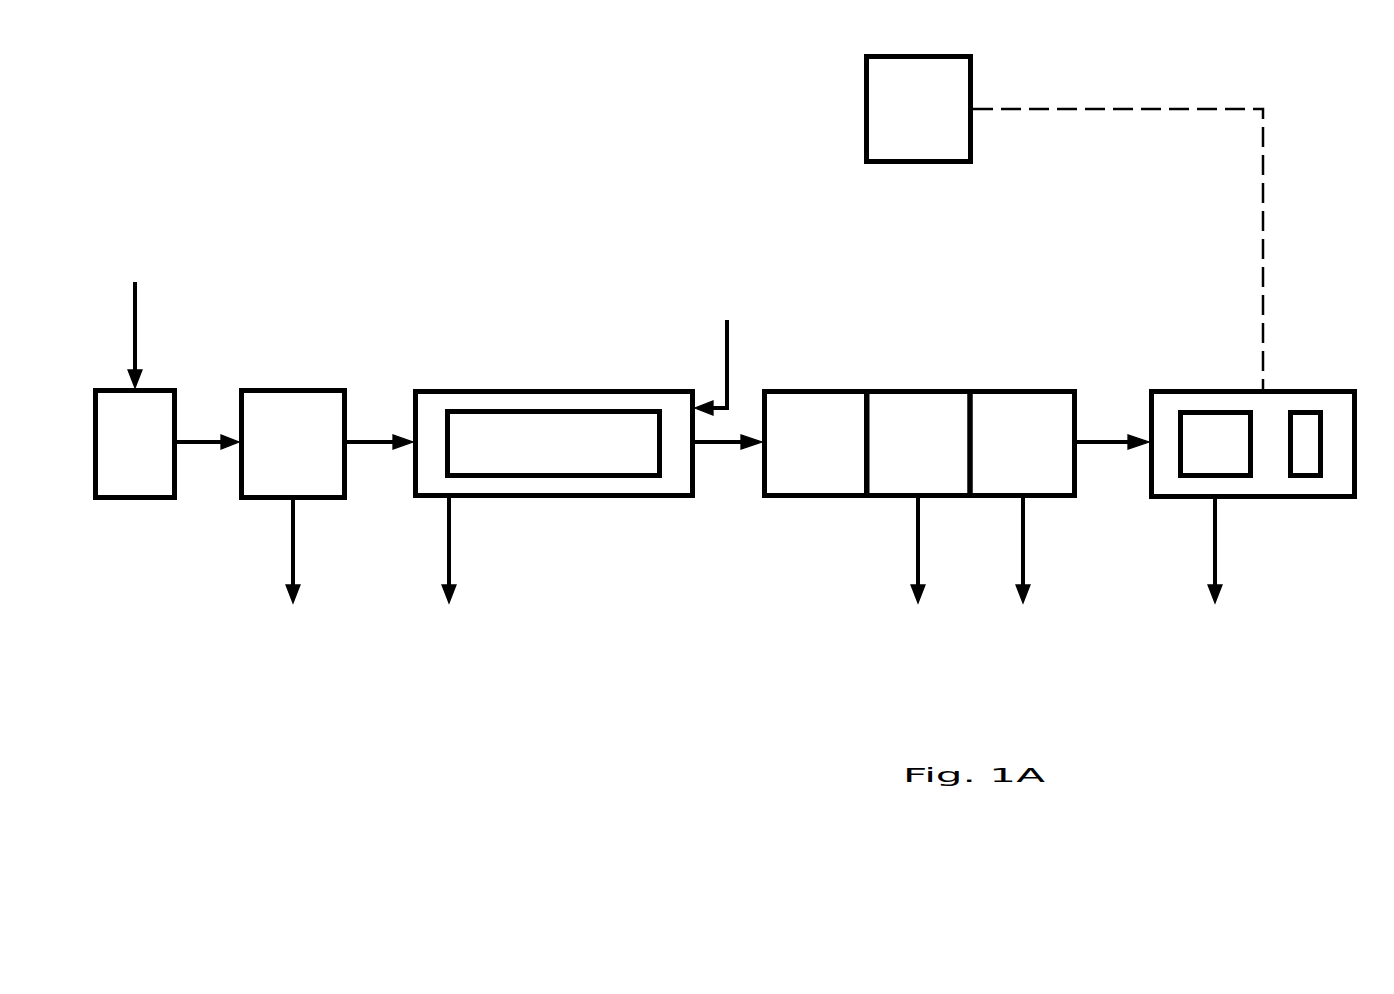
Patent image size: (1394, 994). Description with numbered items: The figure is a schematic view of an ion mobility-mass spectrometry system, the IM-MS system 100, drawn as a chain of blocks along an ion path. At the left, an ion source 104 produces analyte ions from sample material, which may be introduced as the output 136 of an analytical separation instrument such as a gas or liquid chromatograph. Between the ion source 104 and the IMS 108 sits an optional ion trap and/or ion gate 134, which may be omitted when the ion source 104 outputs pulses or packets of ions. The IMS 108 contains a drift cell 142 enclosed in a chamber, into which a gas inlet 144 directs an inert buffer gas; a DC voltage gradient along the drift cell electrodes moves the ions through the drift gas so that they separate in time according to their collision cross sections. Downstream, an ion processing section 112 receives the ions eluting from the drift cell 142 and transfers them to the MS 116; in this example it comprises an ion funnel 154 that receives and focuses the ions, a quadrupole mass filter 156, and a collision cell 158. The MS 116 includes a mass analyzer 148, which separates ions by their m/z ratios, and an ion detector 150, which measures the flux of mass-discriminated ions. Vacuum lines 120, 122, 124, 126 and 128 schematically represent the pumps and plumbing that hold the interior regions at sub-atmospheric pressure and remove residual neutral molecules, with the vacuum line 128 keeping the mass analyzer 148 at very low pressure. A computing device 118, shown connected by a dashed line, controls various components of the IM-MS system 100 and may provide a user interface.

The IM-MS system 100 is at (187, 204).
The ion source 104 is at (134, 500).
The IMS 108 is at (554, 387).
The ion processing section 112 is at (924, 356).
The MS 116 is at (1255, 434).
The computing device 118 is at (1065, 223).
The vacuum line 120 is at (290, 555).
The vacuum line 122 is at (452, 548).
The vacuum line 124 is at (915, 557).
The vacuum line 126 is at (1026, 565).
The vacuum line 128 is at (1218, 548).
The ion trap and/or ion gate 134 is at (256, 388).
The output of an analytical separation instrument 136 is at (133, 318).
The drift cell 142 is at (568, 409).
The gas inlet 144 is at (730, 343).
The mass analyzer 148 is at (1215, 410).
The ion detector 150 is at (1300, 500).
The ion funnel 154 is at (815, 389).
The quadrupole mass filter 156 is at (918, 389).
The collision cell 158 is at (1033, 389).